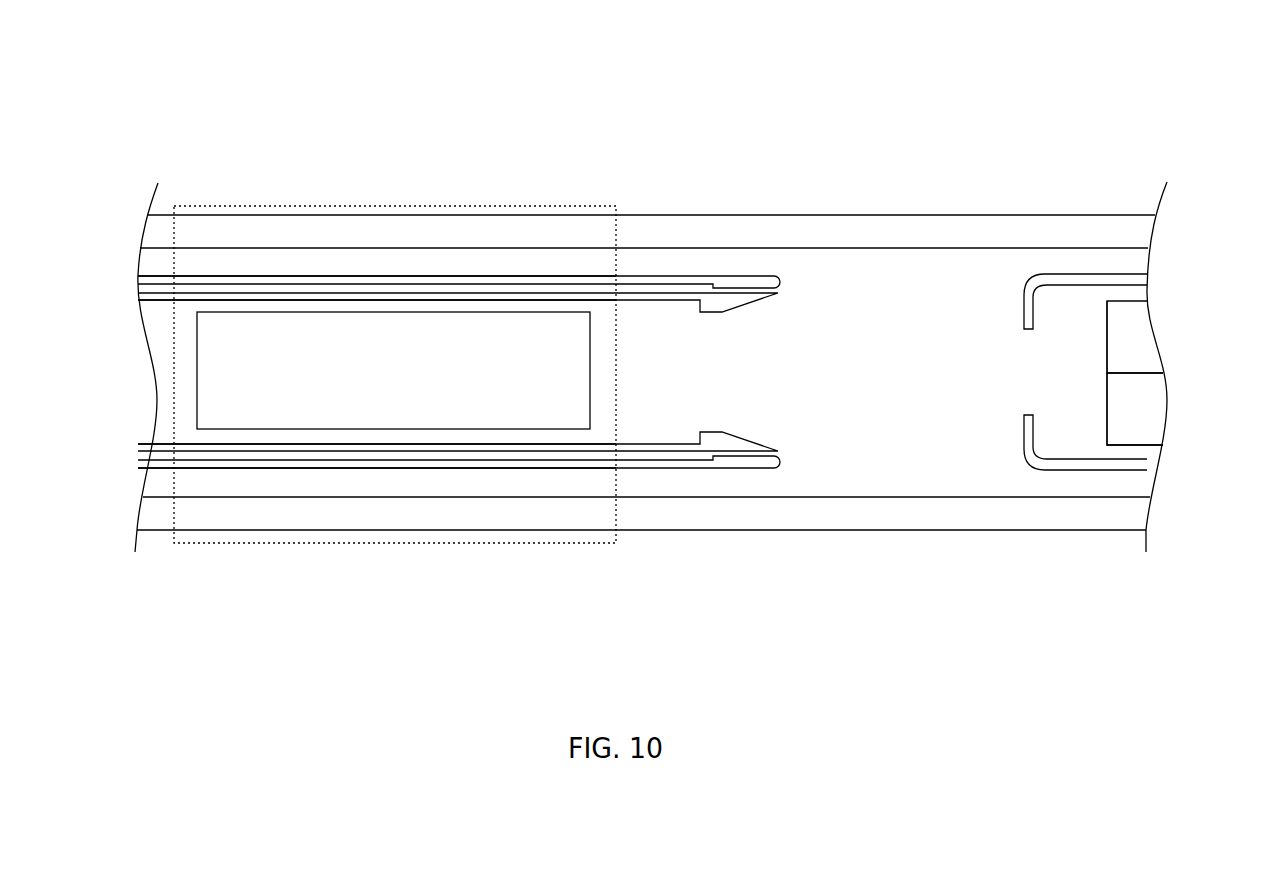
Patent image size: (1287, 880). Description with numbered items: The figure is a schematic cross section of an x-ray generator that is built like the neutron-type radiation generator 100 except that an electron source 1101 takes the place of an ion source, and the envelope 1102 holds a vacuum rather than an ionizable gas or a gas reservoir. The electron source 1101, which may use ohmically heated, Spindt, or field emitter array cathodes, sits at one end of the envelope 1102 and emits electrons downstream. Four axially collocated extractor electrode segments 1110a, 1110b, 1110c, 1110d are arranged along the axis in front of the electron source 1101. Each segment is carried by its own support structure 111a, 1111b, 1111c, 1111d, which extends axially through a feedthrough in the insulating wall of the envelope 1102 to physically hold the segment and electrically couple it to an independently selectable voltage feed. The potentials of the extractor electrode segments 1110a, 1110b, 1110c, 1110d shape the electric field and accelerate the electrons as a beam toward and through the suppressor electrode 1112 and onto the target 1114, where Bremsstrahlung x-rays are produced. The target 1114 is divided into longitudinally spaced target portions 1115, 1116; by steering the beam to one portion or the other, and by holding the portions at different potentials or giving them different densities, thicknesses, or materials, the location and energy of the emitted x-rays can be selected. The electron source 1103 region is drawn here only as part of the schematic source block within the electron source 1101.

The radiation generator 100 is at (100, 71).
The electron source 1101 is at (374, 339).
The envelope 1102 is at (610, 367).
The electron source 1103 is at (318, 356).
The support structure 111a is at (377, 229).
The extractor electrode segment 1110a is at (458, 224).
The extractor electrode segment 1110b is at (515, 211).
The extractor electrode segment 1110c is at (458, 520).
The extractor electrode segment 1110d is at (525, 531).
The support structure 1111b is at (500, 189).
The support structure 1111c is at (377, 526).
The support structure 1111d is at (377, 538).
The suppressor electrode 1112 is at (1031, 321).
The target 1114 is at (1080, 307).
The target portion 1115 is at (1182, 325).
The target portion 1116 is at (1185, 402).